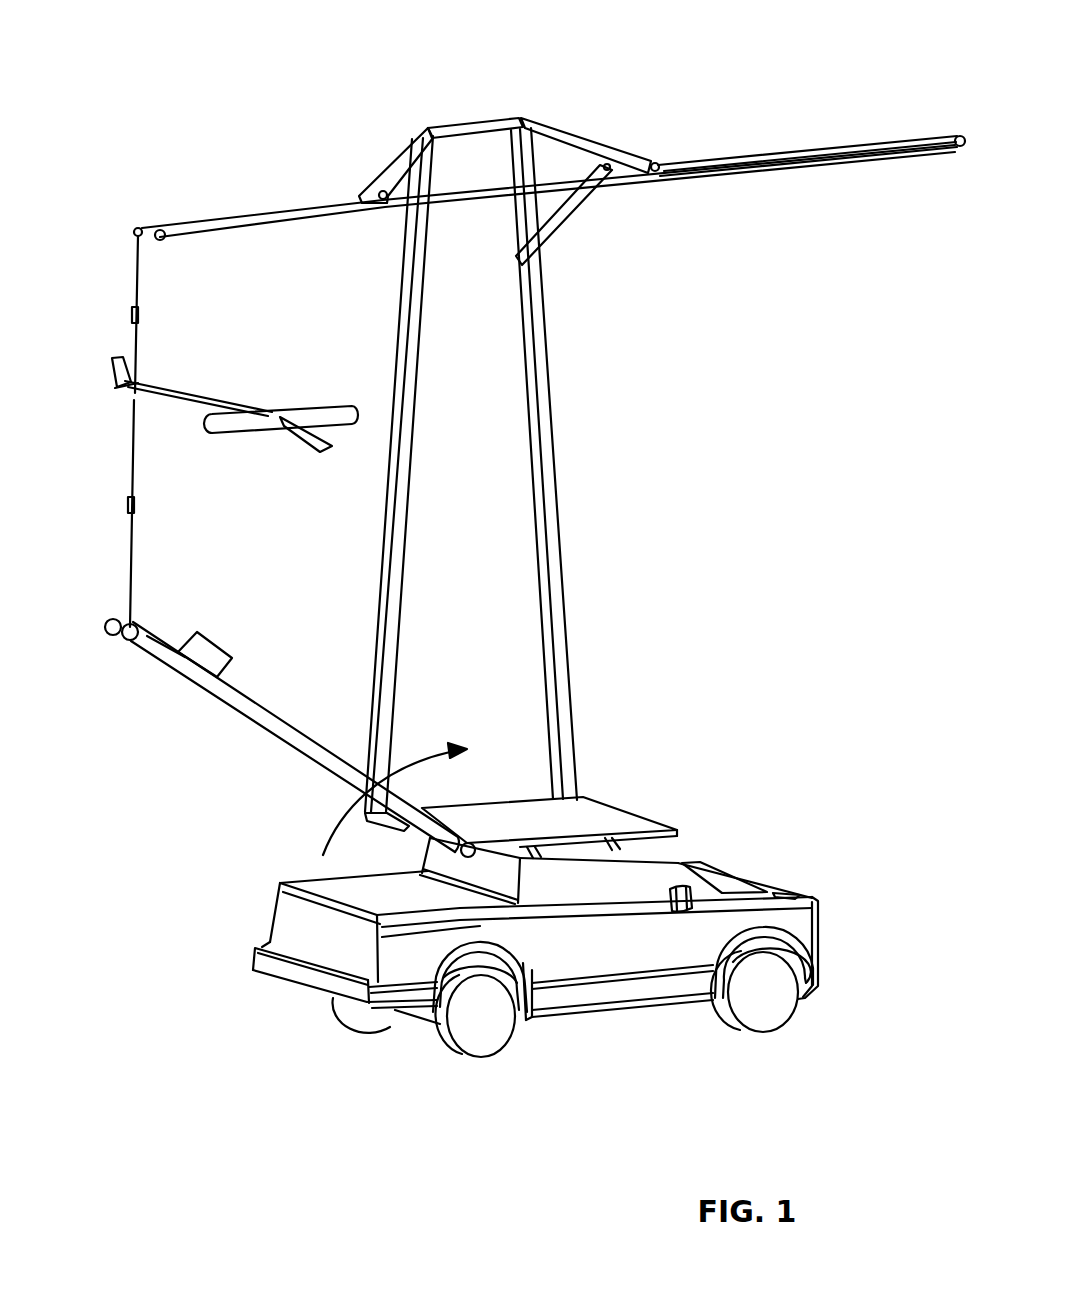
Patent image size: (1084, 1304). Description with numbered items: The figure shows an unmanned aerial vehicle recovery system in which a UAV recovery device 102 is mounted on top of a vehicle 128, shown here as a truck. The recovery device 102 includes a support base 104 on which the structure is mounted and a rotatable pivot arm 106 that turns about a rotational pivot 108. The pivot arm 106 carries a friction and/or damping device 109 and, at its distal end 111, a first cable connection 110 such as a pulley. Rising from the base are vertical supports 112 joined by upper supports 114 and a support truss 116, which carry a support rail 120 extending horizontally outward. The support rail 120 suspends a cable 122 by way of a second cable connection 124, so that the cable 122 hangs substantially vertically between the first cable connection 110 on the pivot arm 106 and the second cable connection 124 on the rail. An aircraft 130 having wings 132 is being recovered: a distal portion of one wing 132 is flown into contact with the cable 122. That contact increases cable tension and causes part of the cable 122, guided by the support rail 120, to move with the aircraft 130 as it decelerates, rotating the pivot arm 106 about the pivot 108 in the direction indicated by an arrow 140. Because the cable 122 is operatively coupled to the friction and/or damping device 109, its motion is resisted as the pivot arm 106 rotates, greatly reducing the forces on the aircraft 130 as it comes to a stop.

The UAV recovery device 102 is at (695, 84).
The support base 104 is at (610, 817).
The pivot arm 106 is at (295, 721).
The rotational pivot 108 is at (472, 843).
The friction and/or damping device 109 is at (208, 648).
The first cable connection 110 is at (127, 637).
The distal end 111 is at (112, 618).
The vertical supports 112 is at (410, 302).
The upper supports 114 is at (418, 143).
The support truss 116 is at (558, 225).
The support rail 120 is at (770, 170).
The cable 122 is at (135, 283).
The second cable connection 124 is at (143, 227).
The vehicle 128 is at (783, 895).
The aircraft 130 is at (197, 401).
The wings 132 is at (113, 372).
The arrow 140 is at (413, 757).